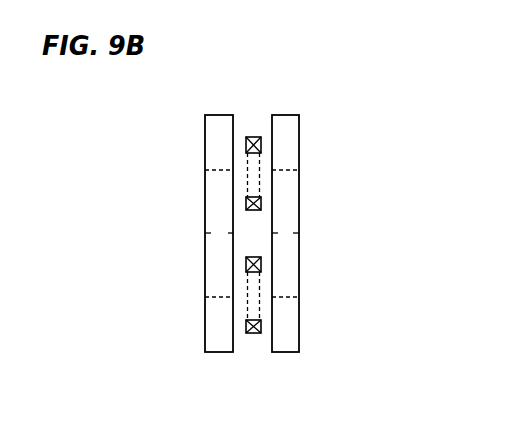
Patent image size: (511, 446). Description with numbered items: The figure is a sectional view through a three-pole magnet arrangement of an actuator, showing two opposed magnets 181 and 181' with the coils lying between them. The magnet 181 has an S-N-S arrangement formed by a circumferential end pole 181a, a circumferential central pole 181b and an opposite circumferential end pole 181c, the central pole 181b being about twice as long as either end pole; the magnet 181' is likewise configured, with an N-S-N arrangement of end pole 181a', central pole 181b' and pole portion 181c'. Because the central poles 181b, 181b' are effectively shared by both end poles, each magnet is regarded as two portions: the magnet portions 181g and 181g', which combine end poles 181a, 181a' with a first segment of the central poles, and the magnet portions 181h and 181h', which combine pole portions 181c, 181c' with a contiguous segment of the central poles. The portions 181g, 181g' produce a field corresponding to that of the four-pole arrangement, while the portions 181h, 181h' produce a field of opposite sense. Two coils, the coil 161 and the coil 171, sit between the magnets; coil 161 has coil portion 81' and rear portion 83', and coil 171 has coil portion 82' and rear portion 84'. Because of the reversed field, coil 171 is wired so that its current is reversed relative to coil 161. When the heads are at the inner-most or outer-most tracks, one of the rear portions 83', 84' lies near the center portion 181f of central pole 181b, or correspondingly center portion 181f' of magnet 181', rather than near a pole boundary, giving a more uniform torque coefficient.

The magnet 181 is at (195, 208).
The circumferential end pole 181a is at (180, 143).
The circumferential central pole 181b is at (184, 233).
The circumferential end pole 181c is at (180, 324).
The center portion of the central pole 181f is at (184, 252).
The magnet portion 181g is at (94, 175).
The magnet portion 181h is at (94, 292).
The magnet 181' is at (313, 206).
The end pole 181a' is at (329, 143).
The central pole 181b' is at (326, 233).
The pole portion 181c' is at (328, 324).
The center portion of the central pole 181f' is at (323, 252).
The magnet portion 181g' is at (421, 175).
The magnet portion 181h' is at (421, 292).
The coil 161 is at (250, 121).
The coil portion 81' is at (240, 142).
The rear portion of the coil 83' is at (263, 137).
The coil 171 is at (251, 347).
The coil portion 82' is at (240, 325).
The rear portion of the coil 84' is at (263, 333).